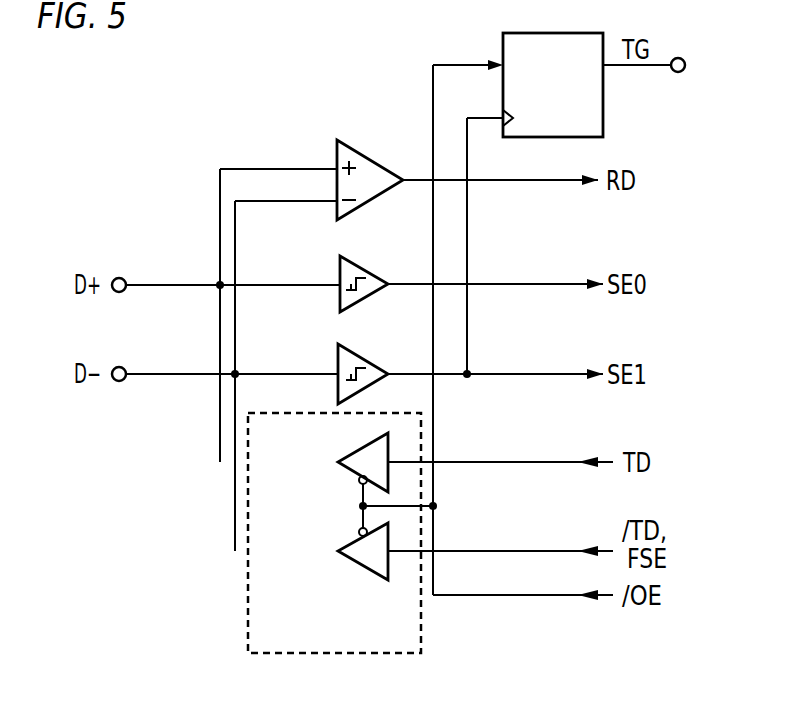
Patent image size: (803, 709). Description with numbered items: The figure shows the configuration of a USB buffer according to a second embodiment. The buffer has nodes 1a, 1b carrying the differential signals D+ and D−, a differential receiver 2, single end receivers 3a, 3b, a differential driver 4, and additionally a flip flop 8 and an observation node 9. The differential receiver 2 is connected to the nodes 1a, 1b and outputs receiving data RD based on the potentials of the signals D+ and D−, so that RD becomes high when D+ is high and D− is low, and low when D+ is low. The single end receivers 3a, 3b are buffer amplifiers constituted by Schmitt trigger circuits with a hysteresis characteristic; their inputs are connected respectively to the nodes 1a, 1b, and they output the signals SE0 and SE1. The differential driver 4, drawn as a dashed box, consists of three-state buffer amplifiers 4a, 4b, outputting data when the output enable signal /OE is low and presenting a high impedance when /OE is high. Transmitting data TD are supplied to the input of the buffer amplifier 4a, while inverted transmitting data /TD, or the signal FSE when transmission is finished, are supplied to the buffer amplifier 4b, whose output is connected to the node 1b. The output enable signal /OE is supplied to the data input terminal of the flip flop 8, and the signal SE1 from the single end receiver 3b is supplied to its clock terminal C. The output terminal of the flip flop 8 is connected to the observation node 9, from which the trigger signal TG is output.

The node 1a is at (125, 279).
The node 1b is at (125, 368).
The differential receiver 2 is at (368, 152).
The single end receiver 3a is at (367, 269).
The single end receiver 3b is at (372, 360).
The differential driver 4 is at (382, 413).
The buffer amplifier 4a is at (350, 447).
The buffer amplifier 4b is at (350, 537).
The flip flop 8 is at (603, 125).
The observation node 9 is at (684, 59).